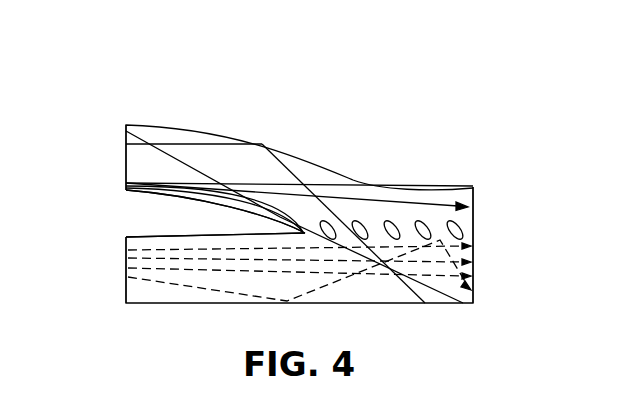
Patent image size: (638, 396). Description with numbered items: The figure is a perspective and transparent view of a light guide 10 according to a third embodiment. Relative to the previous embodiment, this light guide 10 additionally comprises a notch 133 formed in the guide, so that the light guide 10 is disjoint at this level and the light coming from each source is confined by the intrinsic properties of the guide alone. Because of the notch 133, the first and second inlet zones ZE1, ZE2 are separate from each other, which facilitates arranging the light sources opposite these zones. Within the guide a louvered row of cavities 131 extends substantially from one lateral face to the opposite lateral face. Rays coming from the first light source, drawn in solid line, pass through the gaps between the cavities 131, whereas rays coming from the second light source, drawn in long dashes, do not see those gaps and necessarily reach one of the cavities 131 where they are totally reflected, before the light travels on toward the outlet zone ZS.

The light guide 10 is at (311, 98).
The cavities 131 is at (453, 222).
The notch 133 is at (142, 216).
The first inlet zone ZE1 is at (126, 168).
The second inlet zone ZE2 is at (126, 277).
The outlet zone ZS is at (514, 236).